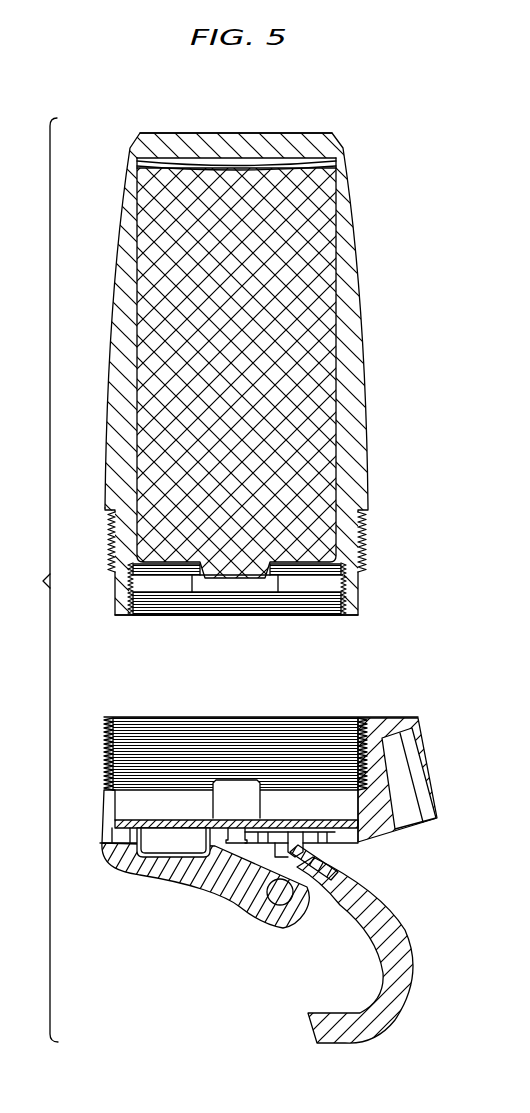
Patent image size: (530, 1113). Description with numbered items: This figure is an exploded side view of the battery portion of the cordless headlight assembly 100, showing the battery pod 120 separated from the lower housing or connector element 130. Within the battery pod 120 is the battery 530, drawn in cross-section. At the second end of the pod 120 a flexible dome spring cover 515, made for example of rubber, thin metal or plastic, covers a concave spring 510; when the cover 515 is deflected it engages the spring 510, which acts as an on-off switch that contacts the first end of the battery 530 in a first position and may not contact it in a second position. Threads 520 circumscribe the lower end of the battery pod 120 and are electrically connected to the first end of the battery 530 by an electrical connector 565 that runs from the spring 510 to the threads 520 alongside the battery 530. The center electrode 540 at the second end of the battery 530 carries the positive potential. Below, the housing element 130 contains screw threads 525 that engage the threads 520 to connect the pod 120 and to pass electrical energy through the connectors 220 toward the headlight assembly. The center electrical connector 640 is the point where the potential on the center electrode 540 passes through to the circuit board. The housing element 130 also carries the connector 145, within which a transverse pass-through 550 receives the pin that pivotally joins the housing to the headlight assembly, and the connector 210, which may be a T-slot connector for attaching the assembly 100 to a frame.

The cordless headlight assembly 100 is at (35, 580).
The battery pod 120 is at (258, 371).
The housing or connector element 130 is at (358, 840).
The connector 145 is at (205, 886).
The connector 210 is at (430, 780).
The connector 220 is at (413, 992).
The spring 510 is at (272, 162).
The dome spring cover 515 is at (216, 134).
The threads 520 is at (368, 522).
The screw threads 525 is at (343, 733).
The battery 530 is at (306, 325).
The center electrode 540 is at (250, 580).
The pass-through 550 is at (122, 616).
The electrical connector 565 is at (134, 234).
The center electrical connector 640 is at (235, 800).